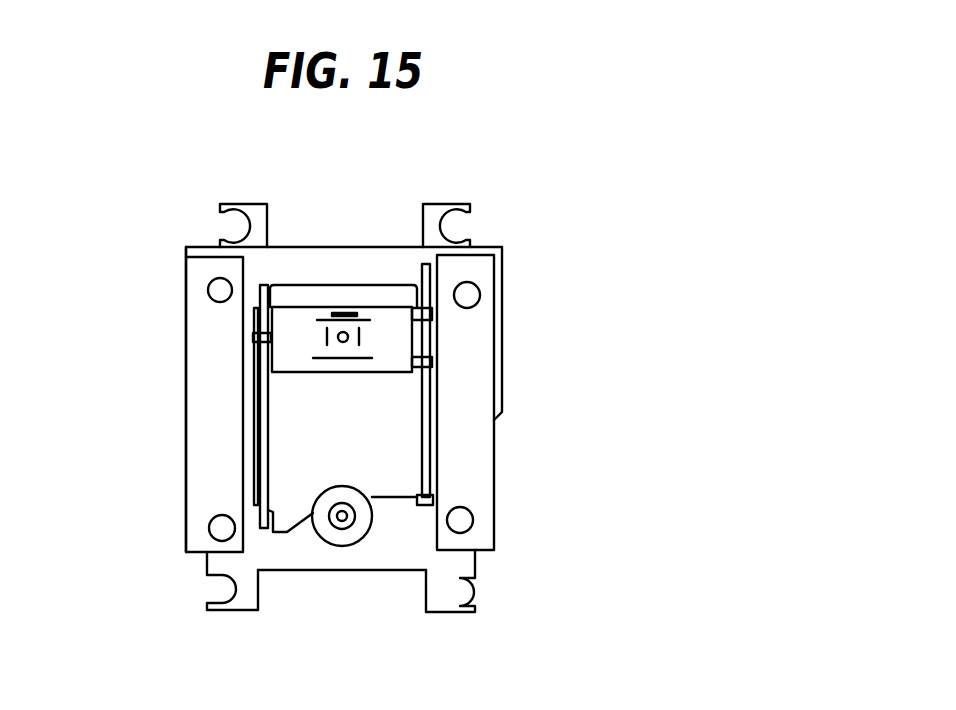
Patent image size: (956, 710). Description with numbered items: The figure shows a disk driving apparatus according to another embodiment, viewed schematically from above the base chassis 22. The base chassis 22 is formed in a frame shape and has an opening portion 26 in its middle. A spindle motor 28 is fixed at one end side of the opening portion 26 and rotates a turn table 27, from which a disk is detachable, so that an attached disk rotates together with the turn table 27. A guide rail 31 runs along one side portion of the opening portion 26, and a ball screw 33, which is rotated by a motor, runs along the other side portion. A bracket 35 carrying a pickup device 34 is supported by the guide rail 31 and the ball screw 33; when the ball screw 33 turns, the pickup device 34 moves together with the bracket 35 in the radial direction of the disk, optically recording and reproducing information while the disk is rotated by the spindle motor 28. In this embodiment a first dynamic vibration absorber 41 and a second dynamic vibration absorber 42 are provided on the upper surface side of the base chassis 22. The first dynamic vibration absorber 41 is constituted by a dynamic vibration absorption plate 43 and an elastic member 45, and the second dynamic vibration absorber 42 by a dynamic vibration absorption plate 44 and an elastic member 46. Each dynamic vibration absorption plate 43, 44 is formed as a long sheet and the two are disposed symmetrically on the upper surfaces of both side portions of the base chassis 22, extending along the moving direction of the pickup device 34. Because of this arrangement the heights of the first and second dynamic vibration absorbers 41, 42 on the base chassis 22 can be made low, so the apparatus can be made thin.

The base chassis 22 is at (343, 258).
The opening portion 26 is at (255, 435).
The turn table 27 is at (345, 502).
The spindle motor 28 is at (340, 540).
The guide rail 31 is at (260, 405).
The ball screw 33 is at (428, 442).
The pickup device 34 is at (343, 342).
The bracket 35 is at (396, 320).
The first dynamic vibration absorber 41 is at (505, 315).
The second dynamic vibration absorber 42 is at (180, 337).
The dynamic vibration absorption plate 43 is at (470, 365).
The dynamic vibration absorption plate 44 is at (200, 378).
The elastic member 45 is at (453, 513).
The elastic member 46 is at (217, 527).